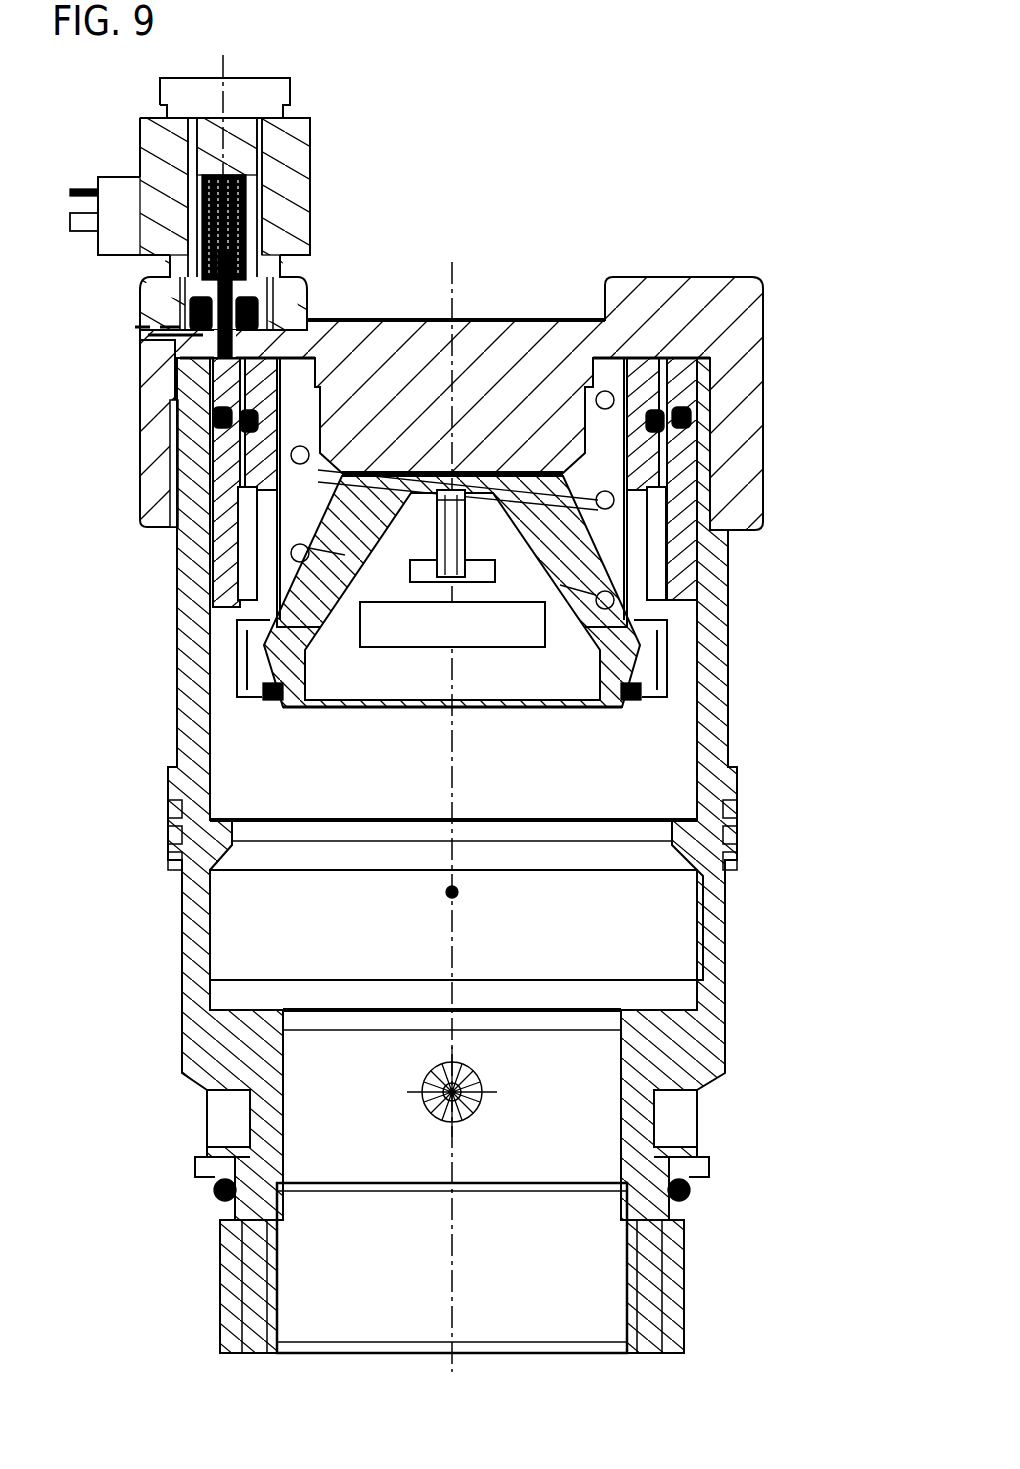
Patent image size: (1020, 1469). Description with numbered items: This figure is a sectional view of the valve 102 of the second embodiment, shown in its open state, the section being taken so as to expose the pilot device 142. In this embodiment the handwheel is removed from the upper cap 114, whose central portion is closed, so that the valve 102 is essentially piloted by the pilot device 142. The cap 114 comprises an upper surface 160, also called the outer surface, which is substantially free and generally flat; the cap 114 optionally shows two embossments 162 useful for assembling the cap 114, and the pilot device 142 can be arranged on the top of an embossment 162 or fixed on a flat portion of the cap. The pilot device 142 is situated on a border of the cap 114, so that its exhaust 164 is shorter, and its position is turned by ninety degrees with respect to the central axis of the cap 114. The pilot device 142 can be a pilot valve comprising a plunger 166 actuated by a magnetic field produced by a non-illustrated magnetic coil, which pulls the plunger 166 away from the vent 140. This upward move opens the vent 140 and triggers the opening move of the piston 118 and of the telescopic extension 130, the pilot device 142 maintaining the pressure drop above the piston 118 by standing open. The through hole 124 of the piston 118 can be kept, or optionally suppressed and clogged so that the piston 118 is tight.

The valve 102 is at (782, 152).
The pilot device 142 is at (346, 116).
The plunger 166 is at (250, 207).
The exhaust 164 is at (150, 323).
The embossment 162 is at (672, 293).
The upper surface 160 is at (492, 320).
The vent 140 is at (207, 338).
The cap 114 is at (742, 398).
The telescopic extension 130 is at (264, 510).
The through hole 124 is at (460, 580).
The piston 118 is at (568, 658).